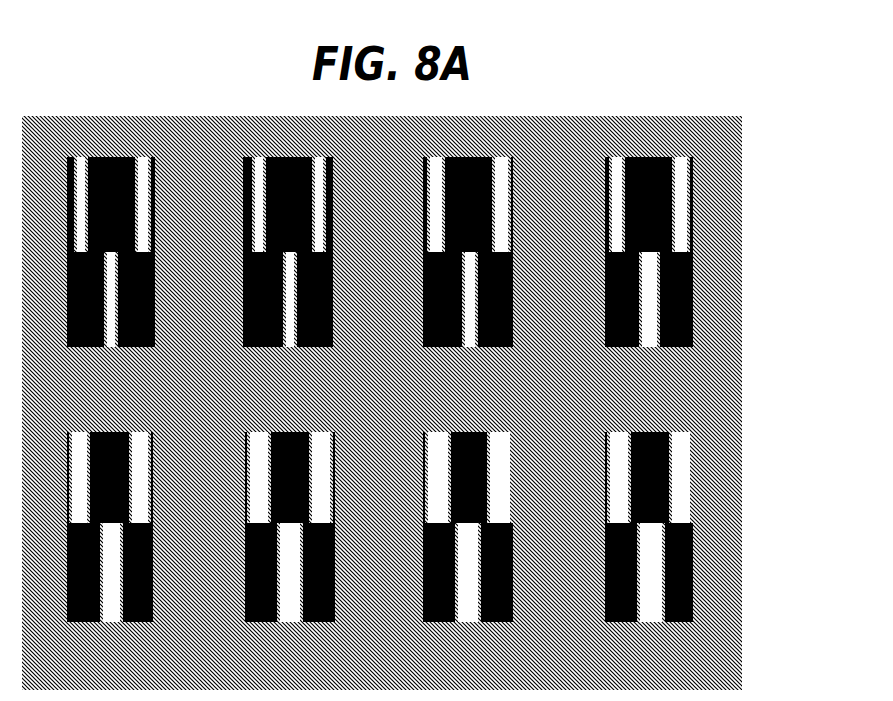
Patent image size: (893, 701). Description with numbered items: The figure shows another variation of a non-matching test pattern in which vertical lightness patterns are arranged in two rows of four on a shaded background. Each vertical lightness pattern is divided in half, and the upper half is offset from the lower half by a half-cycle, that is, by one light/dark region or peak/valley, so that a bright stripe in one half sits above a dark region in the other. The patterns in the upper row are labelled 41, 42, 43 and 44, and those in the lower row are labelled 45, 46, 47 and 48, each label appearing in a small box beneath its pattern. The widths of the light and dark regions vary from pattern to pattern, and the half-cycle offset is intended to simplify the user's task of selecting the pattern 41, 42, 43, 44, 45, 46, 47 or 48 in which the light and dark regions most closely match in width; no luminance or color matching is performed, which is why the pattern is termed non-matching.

The stimulus patch 41 is at (111, 273).
The stimulus patch 42 is at (288, 273).
The stimulus patch 43 is at (468, 273).
The stimulus patch 44 is at (649, 273).
The stimulus patch 45 is at (110, 549).
The stimulus patch 46 is at (290, 549).
The stimulus patch 47 is at (468, 549).
The stimulus patch 48 is at (649, 549).